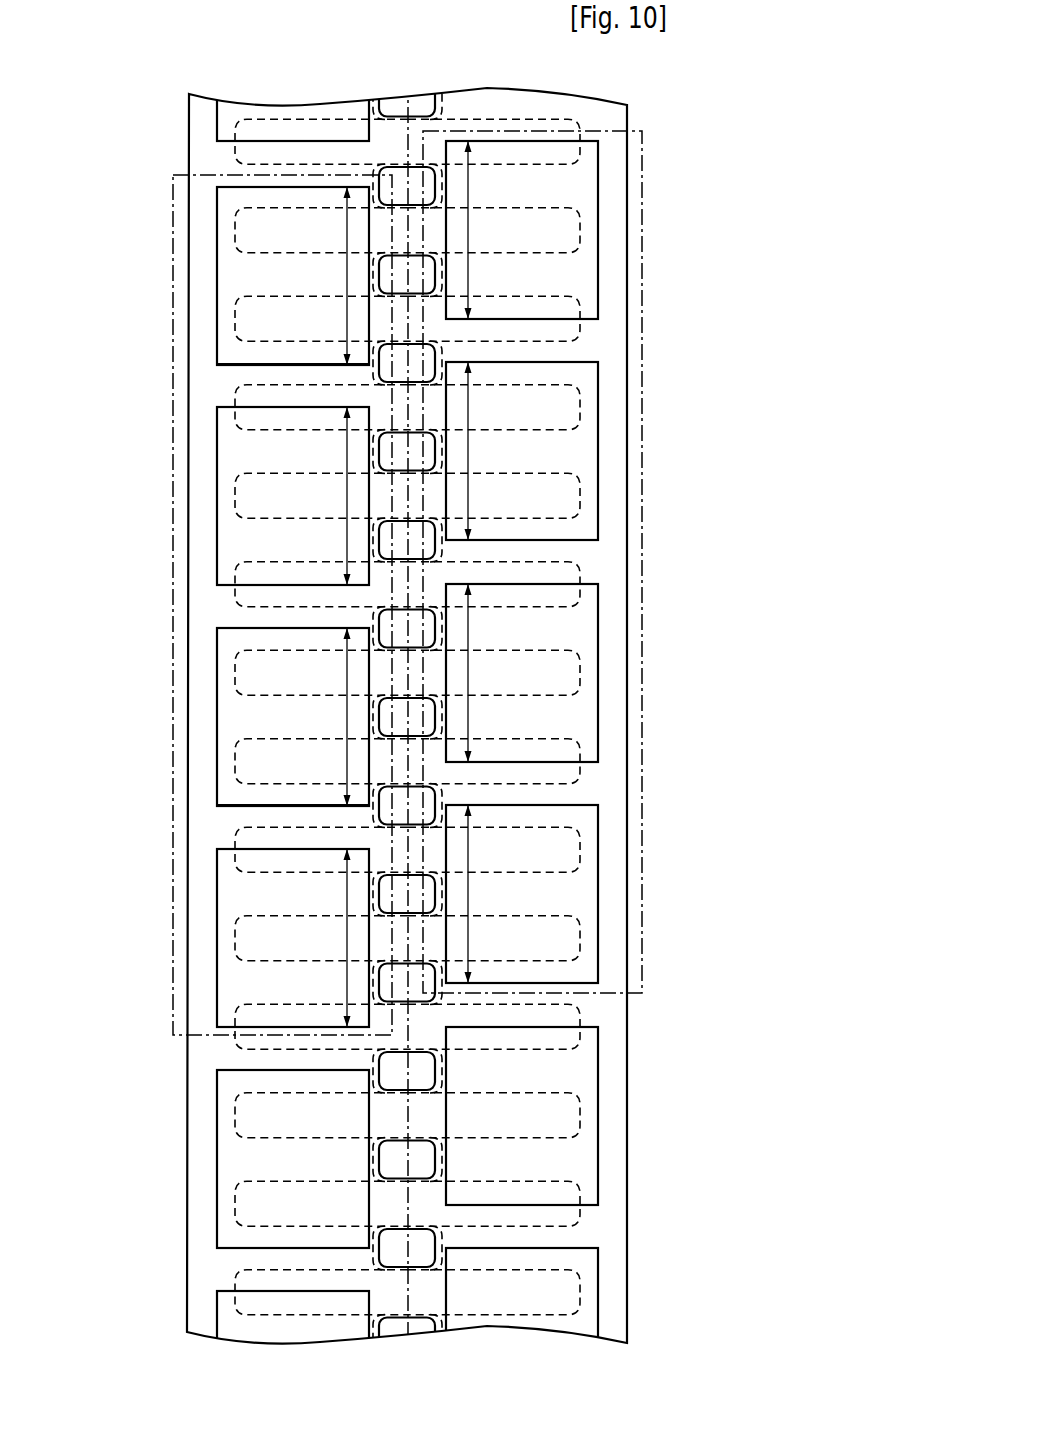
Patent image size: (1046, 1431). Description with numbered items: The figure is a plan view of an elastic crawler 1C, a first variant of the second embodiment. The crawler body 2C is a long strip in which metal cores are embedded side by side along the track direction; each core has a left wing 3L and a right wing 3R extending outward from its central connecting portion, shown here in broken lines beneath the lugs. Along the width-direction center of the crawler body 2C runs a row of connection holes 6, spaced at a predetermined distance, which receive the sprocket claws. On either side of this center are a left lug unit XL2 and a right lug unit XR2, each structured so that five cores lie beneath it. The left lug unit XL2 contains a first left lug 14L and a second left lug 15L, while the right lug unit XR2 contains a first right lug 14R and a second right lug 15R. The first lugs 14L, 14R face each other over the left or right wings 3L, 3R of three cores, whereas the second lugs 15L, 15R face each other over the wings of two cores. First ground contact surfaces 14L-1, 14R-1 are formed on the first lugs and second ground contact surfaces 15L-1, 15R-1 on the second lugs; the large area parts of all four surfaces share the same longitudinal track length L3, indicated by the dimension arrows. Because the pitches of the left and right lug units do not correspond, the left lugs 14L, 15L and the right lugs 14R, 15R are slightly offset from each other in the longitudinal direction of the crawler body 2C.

The elastic crawler 1C is at (627, 74).
The crawler body 2C is at (639, 1107).
The left wing 3L is at (251, 717).
The right wing 3R is at (571, 717).
The connection hole 6 is at (382, 192).
The first left lug 14L is at (239, 911).
The first ground contact surface 14L-1 is at (234, 793).
The second left lug 15L is at (236, 654).
The second ground contact surface 15L-1 is at (231, 566).
The first right lug 14R is at (576, 665).
The first ground contact surface 14R-1 is at (517, 188).
The second right lug 15R is at (576, 892).
The second ground contact surface 15R-1 is at (591, 743).
The left lug unit XL2 is at (235, 603).
The right lug unit XR2 is at (581, 562).
The longitudinal track length L3 is at (408, 584).